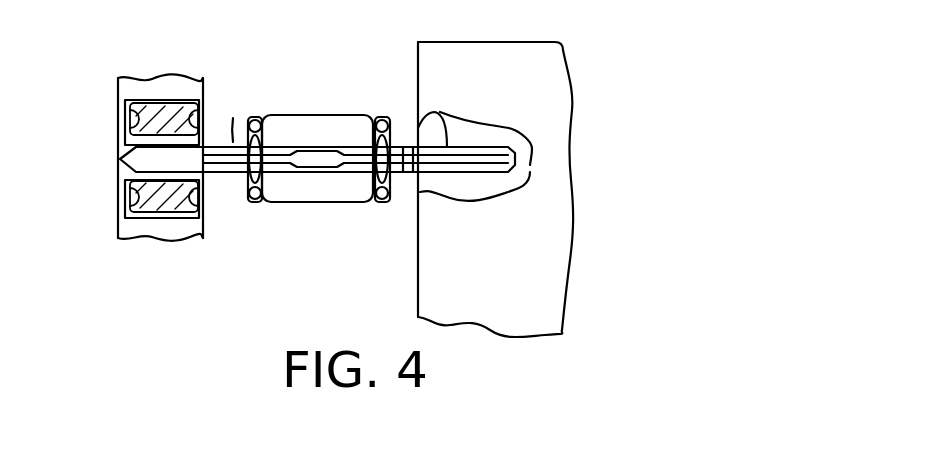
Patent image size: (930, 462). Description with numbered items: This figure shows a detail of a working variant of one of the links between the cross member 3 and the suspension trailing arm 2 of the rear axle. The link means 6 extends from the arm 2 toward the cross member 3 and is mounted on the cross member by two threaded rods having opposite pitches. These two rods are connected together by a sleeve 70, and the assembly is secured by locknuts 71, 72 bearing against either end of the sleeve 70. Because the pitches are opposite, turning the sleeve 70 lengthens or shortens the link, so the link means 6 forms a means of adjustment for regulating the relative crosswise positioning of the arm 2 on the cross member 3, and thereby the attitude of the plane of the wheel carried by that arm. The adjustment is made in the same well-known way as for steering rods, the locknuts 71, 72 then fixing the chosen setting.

The suspension trailing arm 2 is at (128, 80).
The cross member 3 is at (537, 80).
The link means 6 is at (157, 177).
The sleeve 70 is at (322, 204).
The locknut 71 is at (257, 204).
The locknut 72 is at (383, 204).